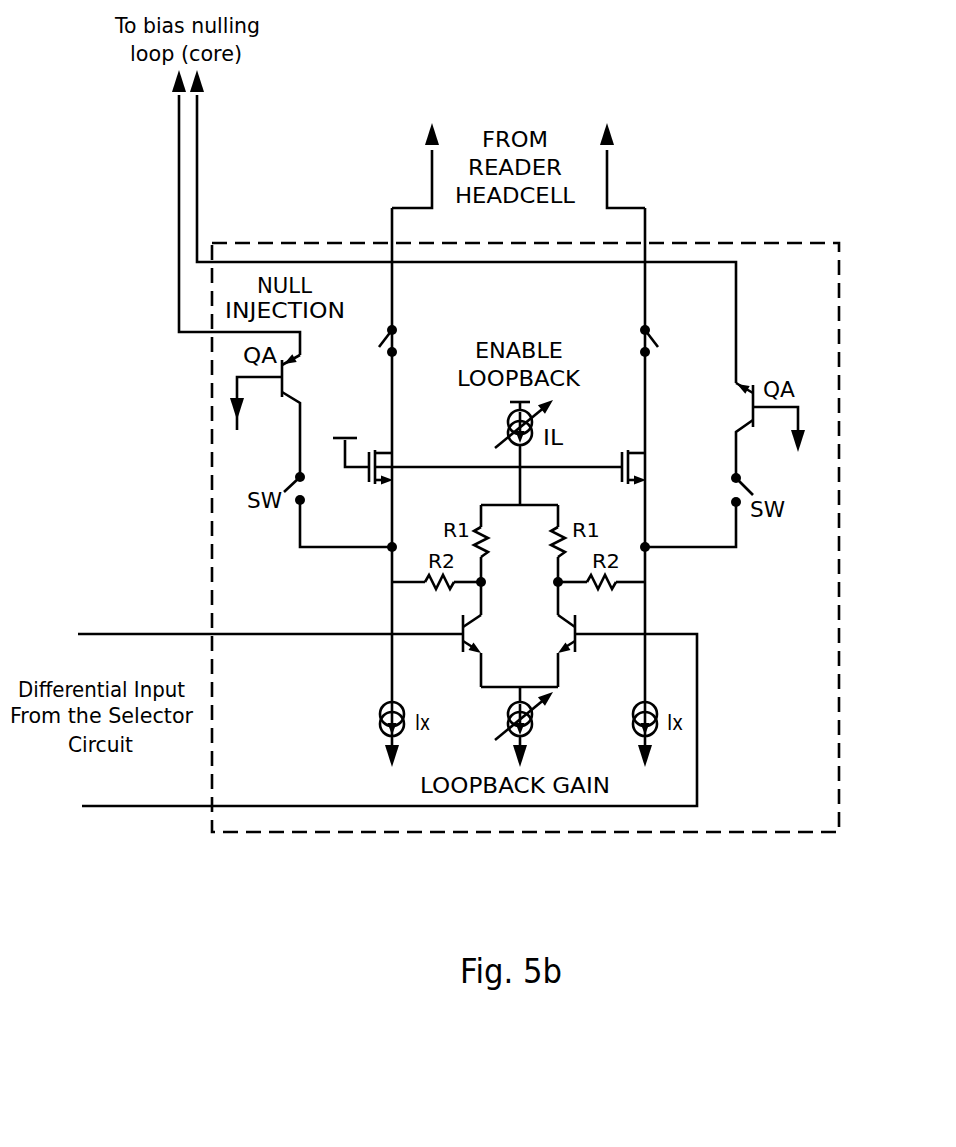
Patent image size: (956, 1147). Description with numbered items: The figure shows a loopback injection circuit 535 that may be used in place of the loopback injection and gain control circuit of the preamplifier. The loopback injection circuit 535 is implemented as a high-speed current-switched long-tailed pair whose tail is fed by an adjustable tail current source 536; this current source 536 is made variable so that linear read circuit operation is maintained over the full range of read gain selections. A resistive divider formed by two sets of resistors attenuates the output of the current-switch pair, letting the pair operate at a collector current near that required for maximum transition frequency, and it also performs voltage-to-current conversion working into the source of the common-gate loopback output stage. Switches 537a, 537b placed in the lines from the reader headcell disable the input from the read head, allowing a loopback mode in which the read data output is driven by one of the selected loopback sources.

The loopback injection circuit 535 is at (785, 126).
The adjustable tail current source 536 is at (512, 712).
The switch 537a is at (692, 323).
The switch 537b is at (380, 343).